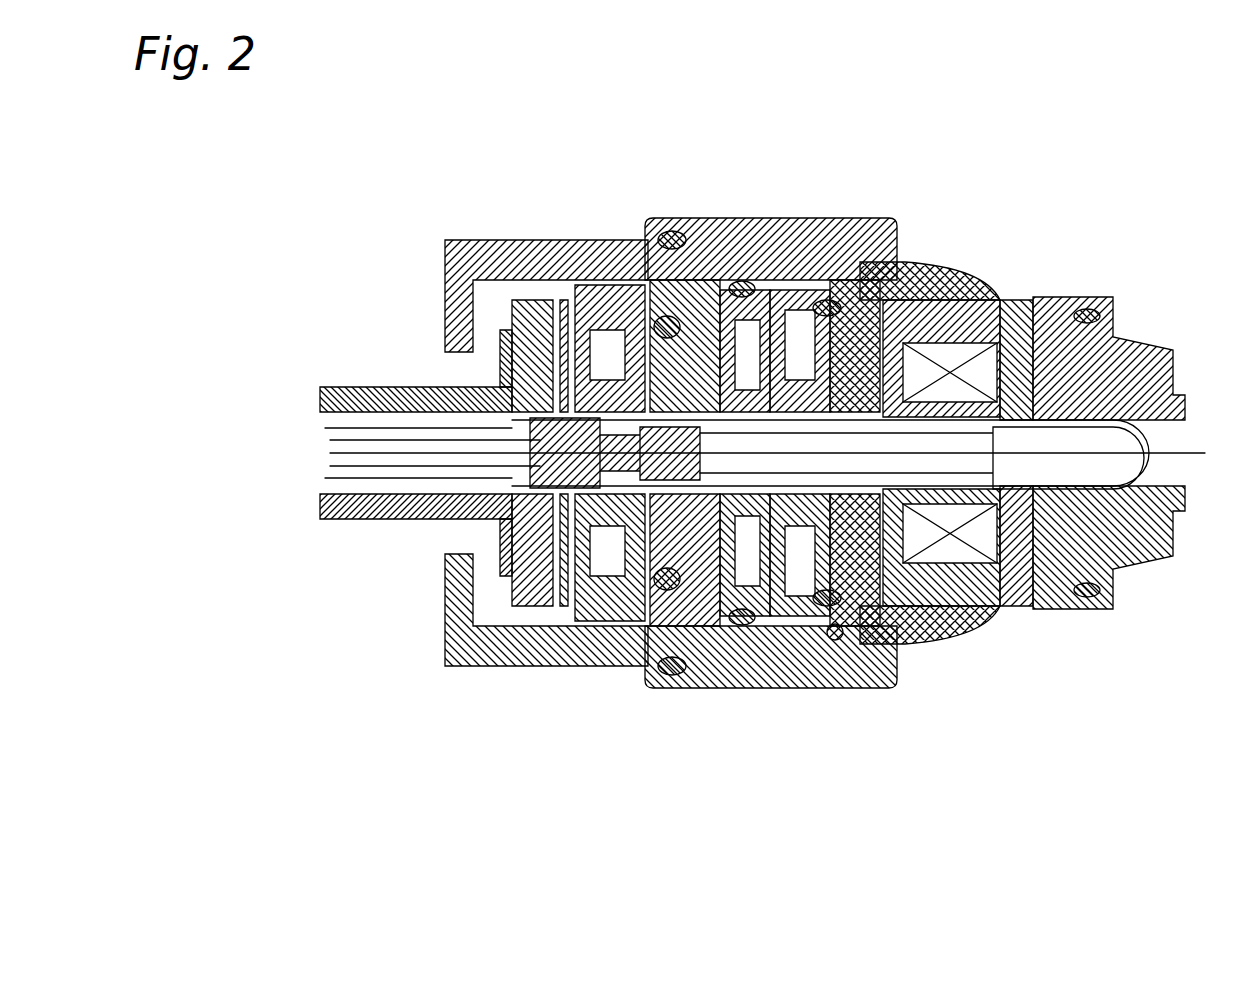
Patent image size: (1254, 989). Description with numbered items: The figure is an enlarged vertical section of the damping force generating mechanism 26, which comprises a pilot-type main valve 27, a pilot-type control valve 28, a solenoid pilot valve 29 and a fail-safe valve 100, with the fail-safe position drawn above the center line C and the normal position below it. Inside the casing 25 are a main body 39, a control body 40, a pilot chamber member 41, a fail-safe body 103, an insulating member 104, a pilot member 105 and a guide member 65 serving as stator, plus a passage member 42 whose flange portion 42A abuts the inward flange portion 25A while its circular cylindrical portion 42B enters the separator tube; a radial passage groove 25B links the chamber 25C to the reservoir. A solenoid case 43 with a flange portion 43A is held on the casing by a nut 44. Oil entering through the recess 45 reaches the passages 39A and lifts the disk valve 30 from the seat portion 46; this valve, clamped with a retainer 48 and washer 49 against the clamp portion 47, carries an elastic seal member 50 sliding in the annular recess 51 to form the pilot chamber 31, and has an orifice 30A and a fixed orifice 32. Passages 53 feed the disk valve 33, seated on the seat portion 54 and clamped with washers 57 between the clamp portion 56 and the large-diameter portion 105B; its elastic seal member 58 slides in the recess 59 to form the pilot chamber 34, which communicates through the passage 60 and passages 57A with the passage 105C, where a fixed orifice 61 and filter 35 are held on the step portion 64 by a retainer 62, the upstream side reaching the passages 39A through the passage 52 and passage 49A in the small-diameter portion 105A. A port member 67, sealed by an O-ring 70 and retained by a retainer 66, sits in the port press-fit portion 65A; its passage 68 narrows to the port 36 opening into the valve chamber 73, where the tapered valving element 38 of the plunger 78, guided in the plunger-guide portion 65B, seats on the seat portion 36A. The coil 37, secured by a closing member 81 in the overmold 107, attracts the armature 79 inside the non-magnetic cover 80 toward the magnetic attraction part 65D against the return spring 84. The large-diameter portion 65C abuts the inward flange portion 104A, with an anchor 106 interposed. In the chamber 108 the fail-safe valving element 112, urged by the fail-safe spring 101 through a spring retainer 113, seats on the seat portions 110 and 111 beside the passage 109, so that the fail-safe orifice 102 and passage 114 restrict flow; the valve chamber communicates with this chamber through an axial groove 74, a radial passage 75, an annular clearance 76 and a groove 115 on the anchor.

The casing 25 is at (448, 250).
The inward flange portion 25A is at (450, 600).
The passage groove 25B is at (470, 300).
The chamber 25C is at (472, 240).
The damping force generating mechanism 26 is at (998, 168).
The main valve 27 is at (570, 320).
The control valve 28 is at (700, 230).
The pilot valve 29 is at (940, 360).
The disk valve 30 is at (535, 310).
The orifice 30A is at (522, 300).
The pilot chamber 31 is at (590, 330).
The fixed orifice 32 is at (520, 285).
The disk valve 33 is at (680, 330).
The pilot chamber 34 is at (745, 300).
The filter 35 is at (520, 442).
The port 36 is at (905, 290).
The seat portion 36A is at (970, 290).
The coil 37 is at (1010, 380).
The valving element 38 is at (950, 385).
The main body 39 is at (475, 672).
The passages 39A is at (468, 672).
The control body 40 is at (565, 600).
The pilot chamber member 41 is at (690, 600).
The passage member 42 is at (340, 528).
The flange portion 42A is at (510, 615).
The circular cylindrical portion 42B is at (340, 387).
The solenoid case 43 is at (1085, 630).
The flange portion 43A is at (1020, 630).
The nut 44 is at (910, 620).
The recess 45 is at (500, 520).
The seat portion 46 is at (520, 640).
The clamp portion 47 is at (480, 540).
The retainer 48 is at (470, 585).
The washer 49 is at (520, 620).
The passage 49A is at (547, 622).
The elastic seal member 50 is at (600, 300).
The annular recess 51 is at (545, 620).
The passage 52 is at (520, 486).
The passages 53 is at (600, 600).
The seat portion 54 is at (640, 600).
The clamp portion 56 is at (648, 300).
The washers 57 is at (718, 330).
The passages 57A is at (710, 570).
The elastic seal member 58 is at (660, 580).
The annular recess 59 is at (670, 580).
The passage 60 is at (630, 600).
The fixed orifice 61 is at (510, 468).
The retainer 62 is at (510, 420).
The step portion 64 is at (505, 345).
The guide member 65 is at (960, 600).
The port press-fit portion 65A is at (890, 620).
The plunger-guide portion 65B is at (1060, 635).
The large-diameter portion 65C is at (950, 590).
The magnetic attraction part 65D is at (1170, 560).
The retainer 66 is at (750, 285).
The port member 67 is at (790, 290).
The passage 68 is at (900, 320).
The O-ring 70 is at (512, 330).
The valve chamber 73 is at (985, 620).
The axial groove 74 is at (880, 590).
The radial passage 75 is at (730, 560).
The annular clearance 76 is at (836, 642).
The plunger 78 is at (1040, 300).
The armature 79 is at (1160, 340).
The cover 80 is at (1100, 435).
The closing member 81 is at (1060, 300).
The return spring 84 is at (960, 345).
The fail-safe valve 100 is at (790, 585).
The fail-safe spring 101 is at (850, 600).
The fail-safe orifice 102 is at (802, 300).
The fail-safe body 103 is at (720, 600).
The insulating member 104 is at (900, 620).
The inward flange portion 104A is at (995, 380).
The pilot member 105 is at (490, 400).
The small-diameter portion 105A is at (660, 320).
The large-diameter portion 105B is at (688, 240).
The passage 105C is at (330, 405).
The anchor 106 is at (880, 280).
The overmold 107 is at (1185, 545).
The chamber 108 is at (840, 570).
The passage 109 is at (760, 610).
The seat portion 110 is at (815, 600).
The seat portion 111 is at (810, 630).
The fail-safe valving element 112 is at (775, 600).
The spring retainer 113 is at (826, 300).
The passage 114 is at (855, 240).
The groove 115 is at (960, 620).
The center line C is at (1150, 453).